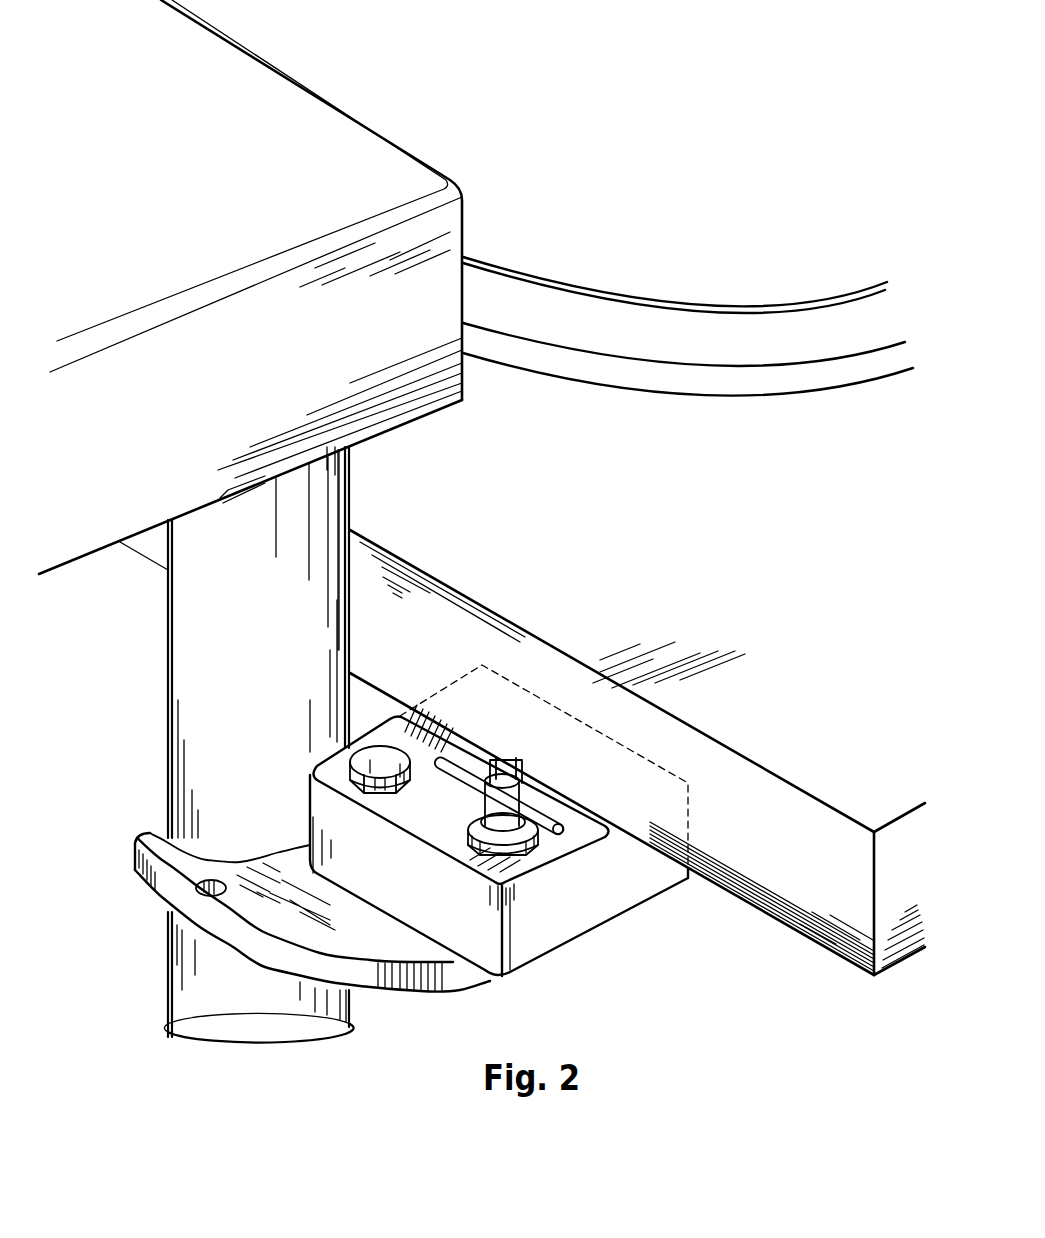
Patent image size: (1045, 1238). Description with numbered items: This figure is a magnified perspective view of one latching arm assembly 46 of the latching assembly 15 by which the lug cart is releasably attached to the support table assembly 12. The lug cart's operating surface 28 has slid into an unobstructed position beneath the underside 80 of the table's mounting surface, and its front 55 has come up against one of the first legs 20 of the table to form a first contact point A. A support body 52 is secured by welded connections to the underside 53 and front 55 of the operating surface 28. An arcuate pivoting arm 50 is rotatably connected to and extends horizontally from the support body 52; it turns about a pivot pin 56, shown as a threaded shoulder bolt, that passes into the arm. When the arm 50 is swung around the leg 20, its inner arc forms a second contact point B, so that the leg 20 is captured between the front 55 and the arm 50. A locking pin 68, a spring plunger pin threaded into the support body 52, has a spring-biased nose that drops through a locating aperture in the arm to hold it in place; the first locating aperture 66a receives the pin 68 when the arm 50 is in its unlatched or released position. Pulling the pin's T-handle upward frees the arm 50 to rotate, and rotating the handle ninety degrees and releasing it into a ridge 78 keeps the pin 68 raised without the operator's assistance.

The support table assembly 12 is at (346, 160).
The underside of the mounting surface 80 is at (87, 555).
The first legs 20 is at (220, 992).
The first contact point A is at (350, 598).
The operating surface 28 is at (833, 738).
The front of operating surface 55 is at (770, 863).
The underside of operating surface 53 is at (903, 963).
The latching arm assembly 46 is at (552, 660).
The support body 52 is at (540, 940).
The pivot pin 56 is at (383, 762).
The locking pin 68 is at (517, 763).
The ridge 78 is at (487, 767).
The arcuate pivoting arm 50 is at (210, 925).
The first locating aperture 66a is at (207, 880).
The second contact point B is at (222, 862).
The latching assembly 15 is at (397, 1003).